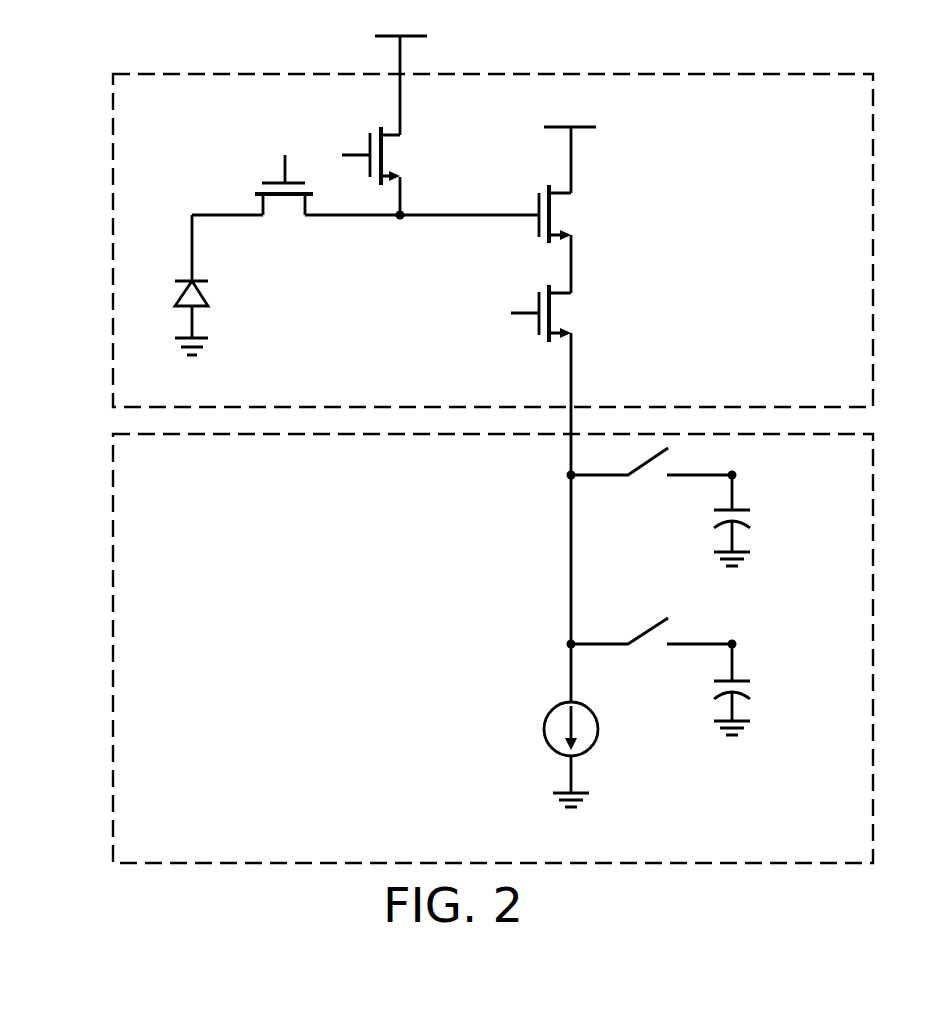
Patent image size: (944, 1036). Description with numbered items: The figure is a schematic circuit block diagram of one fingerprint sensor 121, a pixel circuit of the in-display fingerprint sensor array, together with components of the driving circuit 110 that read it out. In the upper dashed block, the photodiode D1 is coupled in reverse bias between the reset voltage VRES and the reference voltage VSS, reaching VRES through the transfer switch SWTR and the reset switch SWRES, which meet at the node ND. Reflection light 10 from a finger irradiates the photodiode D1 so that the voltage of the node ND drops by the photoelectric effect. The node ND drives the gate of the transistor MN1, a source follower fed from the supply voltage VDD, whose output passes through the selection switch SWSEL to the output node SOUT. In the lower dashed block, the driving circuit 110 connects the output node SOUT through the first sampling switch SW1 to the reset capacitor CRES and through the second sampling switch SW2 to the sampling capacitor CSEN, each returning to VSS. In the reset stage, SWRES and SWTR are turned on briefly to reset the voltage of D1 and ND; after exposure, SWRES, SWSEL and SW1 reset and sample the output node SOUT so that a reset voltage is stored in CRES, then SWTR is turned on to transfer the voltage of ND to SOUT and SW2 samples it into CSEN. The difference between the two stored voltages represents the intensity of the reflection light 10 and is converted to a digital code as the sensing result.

The fingerprint sensor 121 is at (113, 143).
The driving circuit 110 is at (113, 648).
The reflection light 10 is at (160, 293).
The photodiode D1 is at (210, 297).
The transfer switch SWTR is at (287, 205).
The reset switch SWRES is at (403, 155).
The node ND is at (401, 220).
The reset voltage VRES is at (401, 67).
The supply voltage VDD is at (570, 139).
The transistor MN1 is at (562, 215).
The selection switch SWSEL is at (562, 313).
The output node SOUT is at (566, 477).
The first sampling switch SW1 is at (650, 478).
The second sampling switch SW2 is at (650, 648).
The reset capacitor CRES is at (753, 517).
The sampling capacitor CSEN is at (753, 688).
The reference voltage VSS is at (462, 595).